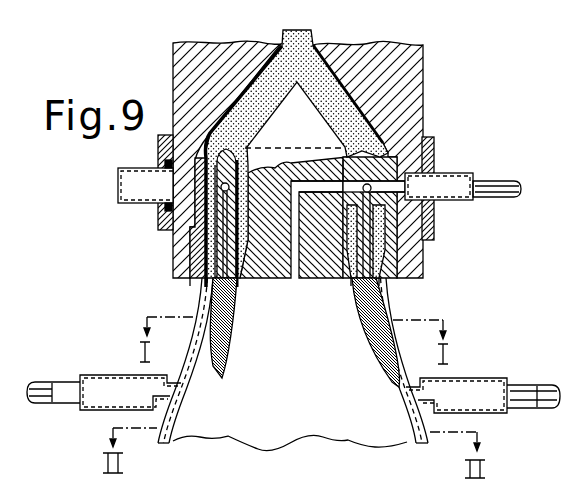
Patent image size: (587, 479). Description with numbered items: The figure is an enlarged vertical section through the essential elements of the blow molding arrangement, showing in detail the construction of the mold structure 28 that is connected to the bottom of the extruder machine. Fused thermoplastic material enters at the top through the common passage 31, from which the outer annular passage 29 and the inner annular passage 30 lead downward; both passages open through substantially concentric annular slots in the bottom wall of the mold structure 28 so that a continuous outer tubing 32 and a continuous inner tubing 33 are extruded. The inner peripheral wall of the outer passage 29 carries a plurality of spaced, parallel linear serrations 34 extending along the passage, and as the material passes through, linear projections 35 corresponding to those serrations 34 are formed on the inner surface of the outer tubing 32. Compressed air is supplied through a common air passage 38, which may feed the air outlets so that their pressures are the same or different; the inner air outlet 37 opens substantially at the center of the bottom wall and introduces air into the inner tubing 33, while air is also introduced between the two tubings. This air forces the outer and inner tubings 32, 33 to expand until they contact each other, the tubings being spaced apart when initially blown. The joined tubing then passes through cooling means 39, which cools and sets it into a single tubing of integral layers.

The mold structure 28 is at (427, 67).
The outer annular passage 29 is at (210, 230).
The inner annular passage 30 is at (200, 243).
The common passage 31 is at (296, 52).
The outer tubing 32 is at (202, 330).
The inner tubing 33 is at (228, 350).
The serrations 34 is at (197, 280).
The linear projections 35 is at (238, 290).
The inner air outlet 37 is at (352, 293).
The common air passage 38 is at (435, 139).
The cooling means 39 is at (481, 380).